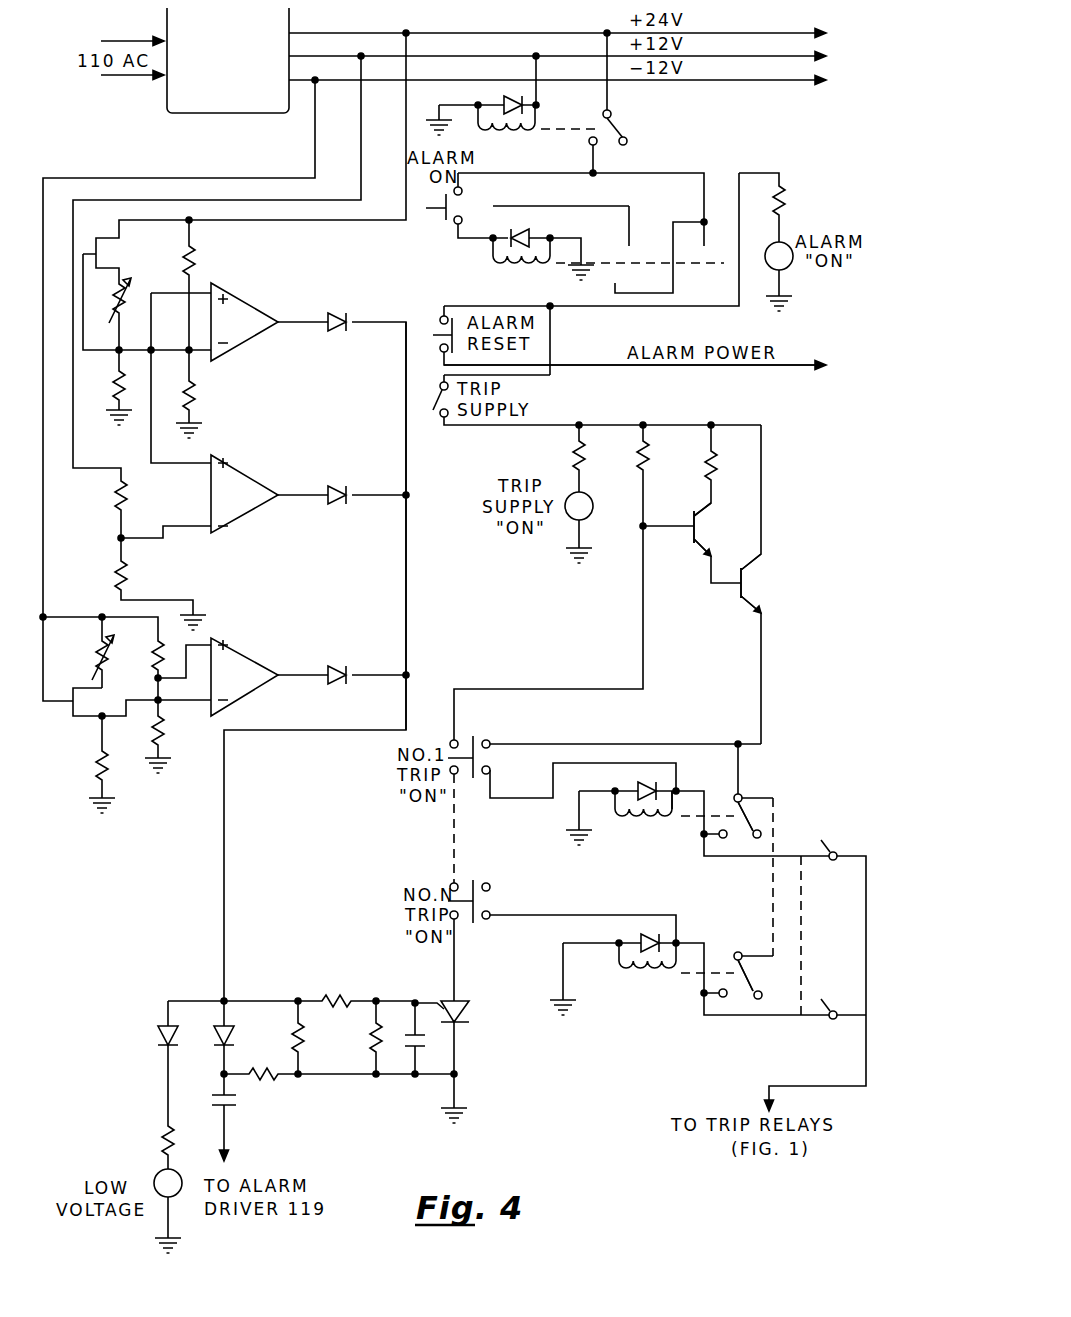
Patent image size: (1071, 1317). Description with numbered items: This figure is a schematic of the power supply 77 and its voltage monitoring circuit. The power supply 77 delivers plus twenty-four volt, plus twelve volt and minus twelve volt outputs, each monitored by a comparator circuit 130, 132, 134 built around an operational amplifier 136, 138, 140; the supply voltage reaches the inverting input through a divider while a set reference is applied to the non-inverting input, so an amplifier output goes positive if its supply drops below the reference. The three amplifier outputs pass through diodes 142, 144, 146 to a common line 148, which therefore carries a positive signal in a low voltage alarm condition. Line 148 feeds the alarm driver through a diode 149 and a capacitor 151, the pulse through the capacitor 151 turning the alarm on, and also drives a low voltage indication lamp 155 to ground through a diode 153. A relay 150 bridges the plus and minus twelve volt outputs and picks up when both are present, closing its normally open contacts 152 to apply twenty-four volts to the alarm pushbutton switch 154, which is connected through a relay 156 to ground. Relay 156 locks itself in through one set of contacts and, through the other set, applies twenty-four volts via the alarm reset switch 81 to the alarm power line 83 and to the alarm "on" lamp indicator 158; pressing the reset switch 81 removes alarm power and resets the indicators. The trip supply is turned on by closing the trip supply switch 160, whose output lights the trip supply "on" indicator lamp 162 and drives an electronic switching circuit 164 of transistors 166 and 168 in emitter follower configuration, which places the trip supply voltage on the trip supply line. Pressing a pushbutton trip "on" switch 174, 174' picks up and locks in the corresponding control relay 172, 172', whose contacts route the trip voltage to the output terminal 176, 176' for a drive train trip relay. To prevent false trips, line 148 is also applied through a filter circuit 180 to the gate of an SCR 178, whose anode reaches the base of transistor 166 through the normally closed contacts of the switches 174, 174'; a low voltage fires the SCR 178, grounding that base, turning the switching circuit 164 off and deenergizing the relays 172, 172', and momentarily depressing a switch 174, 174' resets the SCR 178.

The power supply 77 is at (290, 18).
The alarm reset switch 81 is at (438, 322).
The alarm power line 83 is at (568, 366).
The comparator circuit 130 is at (167, 266).
The comparator circuit 132 is at (184, 502).
The comparator circuit 134 is at (149, 671).
The operational amplifier 136 is at (240, 310).
The operational amplifier 138 is at (240, 492).
The operational amplifier 140 is at (252, 670).
The diode 142 is at (340, 312).
The diode 144 is at (340, 487).
The diode 146 is at (340, 667).
The common line 148 is at (405, 590).
The diode 149 is at (216, 1035).
The relay 150 is at (484, 135).
The capacitor 151 is at (236, 1103).
The normally open contacts 152 is at (618, 134).
The diode 153 is at (158, 1032).
The alarm pushbutton switch 154 is at (443, 222).
The low voltage indication lamp 155 is at (158, 1176).
The relay 156 is at (492, 268).
The alarm "on" lamp indicator 158 is at (788, 246).
The trip supply switch 160 is at (432, 414).
The trip supply "on" indicator lamp 162 is at (590, 500).
The electronic switching circuit 164 is at (692, 505).
The transistor 166 is at (690, 536).
The transistor 168 is at (736, 598).
The control relay 172 is at (637, 816).
The control relay 172' is at (644, 968).
The pushbutton trip "on" switch 174 is at (453, 744).
The pushbutton trip "on" switch 174' is at (452, 888).
The output terminal 176 is at (778, 827).
The output terminal 176' is at (778, 1002).
The SCR 178 is at (458, 1017).
The filter circuit 180 is at (353, 1047).